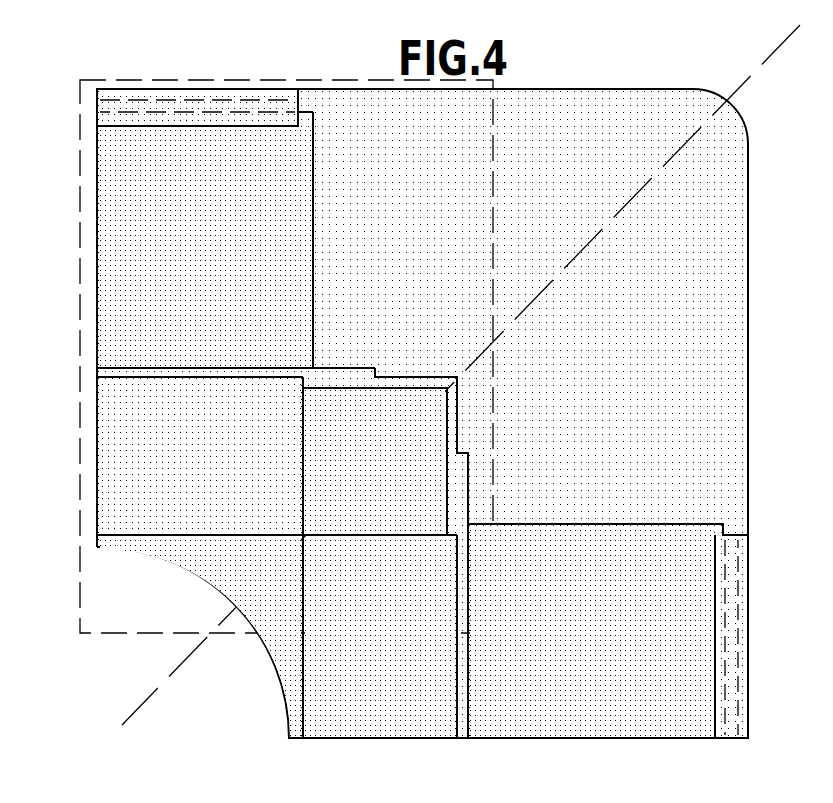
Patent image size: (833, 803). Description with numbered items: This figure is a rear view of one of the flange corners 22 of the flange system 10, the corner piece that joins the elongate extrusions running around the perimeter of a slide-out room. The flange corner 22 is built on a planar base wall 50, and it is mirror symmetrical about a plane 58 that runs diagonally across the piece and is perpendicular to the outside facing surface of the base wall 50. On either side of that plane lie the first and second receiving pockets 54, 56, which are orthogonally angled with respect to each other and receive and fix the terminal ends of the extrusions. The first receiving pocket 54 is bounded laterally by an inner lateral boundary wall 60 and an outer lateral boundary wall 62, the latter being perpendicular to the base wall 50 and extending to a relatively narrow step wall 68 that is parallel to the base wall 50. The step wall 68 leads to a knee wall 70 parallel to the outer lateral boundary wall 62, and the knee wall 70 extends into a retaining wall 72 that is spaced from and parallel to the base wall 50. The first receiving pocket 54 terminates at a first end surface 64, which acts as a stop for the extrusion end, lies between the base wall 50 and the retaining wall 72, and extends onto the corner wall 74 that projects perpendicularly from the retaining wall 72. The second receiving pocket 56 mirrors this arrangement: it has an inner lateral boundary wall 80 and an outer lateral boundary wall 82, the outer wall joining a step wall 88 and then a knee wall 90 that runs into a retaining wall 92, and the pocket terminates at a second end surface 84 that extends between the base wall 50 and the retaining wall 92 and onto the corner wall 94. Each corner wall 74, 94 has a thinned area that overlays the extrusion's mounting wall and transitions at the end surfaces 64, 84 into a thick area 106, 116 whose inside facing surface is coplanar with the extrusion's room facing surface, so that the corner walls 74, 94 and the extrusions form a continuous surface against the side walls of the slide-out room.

The flange system 10 is at (78, 87).
The flange corner 22 is at (646, 64).
The planar base wall 50 is at (419, 245).
The first receiving pocket 54 is at (90, 233).
The second receiving pocket 56 is at (504, 749).
The plane 58 is at (752, 72).
The inner lateral boundary wall 60 is at (180, 537).
The outer lateral boundary wall 62 is at (147, 95).
The first end surface 64 is at (298, 430).
The step wall 68 is at (183, 108).
The knee wall 70 is at (230, 120).
The retaining wall 72 is at (228, 237).
The corner wall 74 is at (163, 375).
The inner lateral boundary wall 80 is at (305, 663).
The outer lateral boundary wall 82 is at (742, 622).
The second end surface 84 is at (417, 535).
The step wall 88 is at (733, 672).
The knee wall 90 is at (720, 592).
The retaining wall 92 is at (593, 640).
The corner wall 94 is at (463, 678).
The thick area 106 is at (347, 377).
The thick area 116 is at (460, 488).